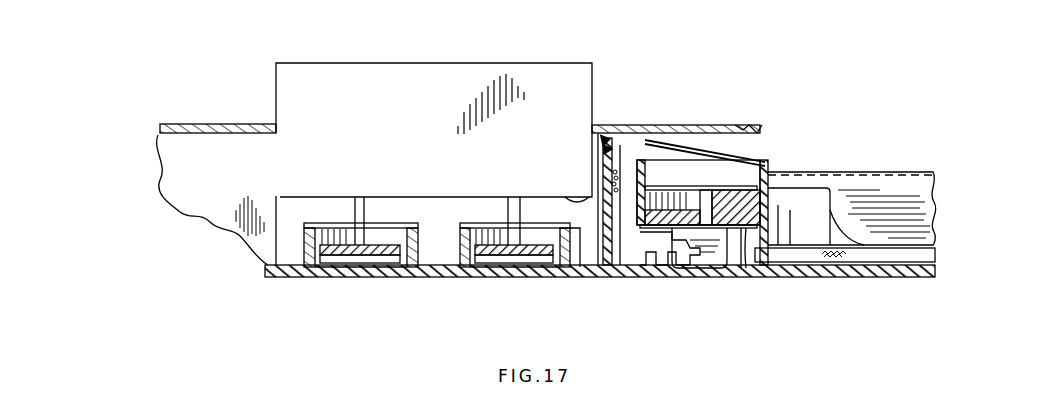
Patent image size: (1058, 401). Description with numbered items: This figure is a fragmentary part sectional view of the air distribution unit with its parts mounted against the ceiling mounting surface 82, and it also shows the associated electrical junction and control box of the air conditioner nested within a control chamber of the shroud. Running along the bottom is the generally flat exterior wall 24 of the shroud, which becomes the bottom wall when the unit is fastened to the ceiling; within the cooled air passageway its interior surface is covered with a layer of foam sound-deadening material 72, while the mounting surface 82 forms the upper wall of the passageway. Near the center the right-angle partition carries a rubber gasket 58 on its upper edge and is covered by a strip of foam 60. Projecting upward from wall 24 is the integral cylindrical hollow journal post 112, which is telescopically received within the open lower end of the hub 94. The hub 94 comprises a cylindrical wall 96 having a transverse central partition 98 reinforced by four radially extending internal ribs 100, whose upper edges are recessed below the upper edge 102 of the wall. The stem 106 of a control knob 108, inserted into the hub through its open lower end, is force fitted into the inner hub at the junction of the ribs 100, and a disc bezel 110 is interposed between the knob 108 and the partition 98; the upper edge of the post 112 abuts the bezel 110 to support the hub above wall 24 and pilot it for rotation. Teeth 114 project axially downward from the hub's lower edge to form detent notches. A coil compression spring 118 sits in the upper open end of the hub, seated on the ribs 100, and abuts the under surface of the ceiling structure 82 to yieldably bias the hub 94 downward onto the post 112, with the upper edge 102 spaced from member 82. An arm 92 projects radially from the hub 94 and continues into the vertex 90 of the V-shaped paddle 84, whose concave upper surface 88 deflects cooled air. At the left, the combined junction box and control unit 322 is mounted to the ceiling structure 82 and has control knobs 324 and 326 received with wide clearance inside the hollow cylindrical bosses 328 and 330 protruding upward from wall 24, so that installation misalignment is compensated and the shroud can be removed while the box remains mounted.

The exterior wall 24 is at (577, 268).
The rubber gasket 58 is at (628, 140).
The strip of foam 60 is at (622, 268).
The layer of foam sound-deadening material 72 is at (926, 262).
The mounting surface 82 is at (197, 124).
The paddle 84 is at (936, 186).
The concave upper surface 88 is at (926, 230).
The vertex 90 is at (882, 172).
The arm 92 is at (806, 188).
The hub 94 is at (771, 160).
The cylindrical wall 96 is at (650, 176).
The transverse central partition 98 is at (674, 212).
The internal ribs 100 is at (718, 208).
The upper edge 102 is at (664, 160).
The stem 106 is at (708, 190).
The control knob 108 is at (706, 268).
The disc bezel 110 is at (744, 268).
The journal post 112 is at (764, 240).
The teeth 114 is at (684, 268).
The coil compression spring 118 is at (740, 150).
The combined junction box and control unit 322 is at (513, 70).
The control knob 324 is at (374, 268).
The control knob 326 is at (489, 268).
The cylindrical boss 328 is at (306, 234).
The cylindrical boss 330 is at (460, 240).